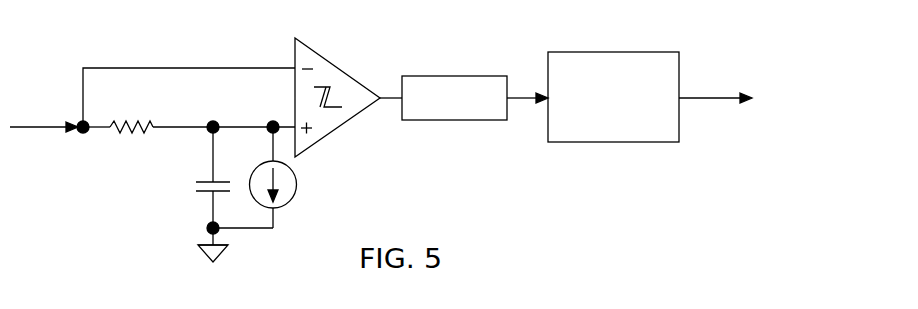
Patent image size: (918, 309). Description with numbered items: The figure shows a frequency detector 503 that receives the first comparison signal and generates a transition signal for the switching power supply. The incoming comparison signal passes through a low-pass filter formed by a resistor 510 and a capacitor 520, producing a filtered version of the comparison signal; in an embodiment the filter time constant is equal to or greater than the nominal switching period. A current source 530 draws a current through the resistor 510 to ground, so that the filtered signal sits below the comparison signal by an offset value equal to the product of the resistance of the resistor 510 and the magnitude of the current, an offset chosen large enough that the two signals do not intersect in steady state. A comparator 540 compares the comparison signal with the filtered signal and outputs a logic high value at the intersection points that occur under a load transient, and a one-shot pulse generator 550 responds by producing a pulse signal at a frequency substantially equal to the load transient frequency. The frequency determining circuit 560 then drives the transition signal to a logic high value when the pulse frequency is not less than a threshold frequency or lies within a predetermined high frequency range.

The frequency detector 503 is at (50, 37).
The resistor 510 is at (125, 139).
The capacitor 520 is at (206, 196).
The current source 530 is at (287, 206).
The comparator 540 is at (332, 57).
The one-shot pulse generator 550 is at (446, 75).
The frequency determining circuit 560 is at (607, 51).